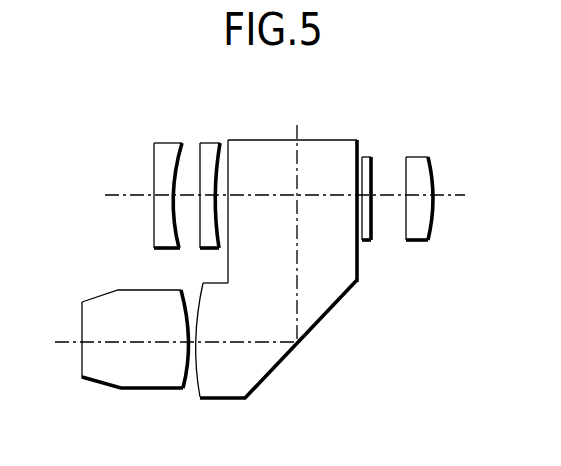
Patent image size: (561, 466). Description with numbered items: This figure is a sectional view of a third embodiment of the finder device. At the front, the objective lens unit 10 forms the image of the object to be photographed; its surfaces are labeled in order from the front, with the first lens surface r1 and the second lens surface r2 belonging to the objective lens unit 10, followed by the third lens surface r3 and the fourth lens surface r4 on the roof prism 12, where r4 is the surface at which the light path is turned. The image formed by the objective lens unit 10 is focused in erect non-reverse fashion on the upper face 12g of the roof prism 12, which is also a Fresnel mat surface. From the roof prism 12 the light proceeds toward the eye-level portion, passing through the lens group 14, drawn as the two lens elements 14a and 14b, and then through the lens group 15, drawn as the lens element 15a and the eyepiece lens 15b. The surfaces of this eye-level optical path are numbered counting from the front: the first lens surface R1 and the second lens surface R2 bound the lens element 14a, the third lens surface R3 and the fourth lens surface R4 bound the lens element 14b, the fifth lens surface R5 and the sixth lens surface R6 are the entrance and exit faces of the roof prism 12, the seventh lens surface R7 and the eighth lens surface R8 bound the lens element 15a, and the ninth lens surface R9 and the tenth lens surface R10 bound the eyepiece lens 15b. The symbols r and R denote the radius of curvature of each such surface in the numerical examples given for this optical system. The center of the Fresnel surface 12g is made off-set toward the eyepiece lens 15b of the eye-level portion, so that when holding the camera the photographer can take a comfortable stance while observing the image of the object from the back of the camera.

The objective lens unit 10 is at (152, 384).
The first lens surface r1 is at (80, 366).
The second lens surface r2 is at (187, 388).
The third lens surface r3 is at (196, 392).
The fourth lens surface r4 is at (315, 139).
The roof prism 12 is at (263, 377).
The upper face of the roof prism 12g is at (263, 146).
The second lens group 14 is at (230, 102).
The first lens of lens group 14 14a is at (167, 143).
The second lens of lens group 14 14b is at (211, 146).
The first lens surface R1 is at (152, 234).
The second lens surface R2 is at (175, 240).
The third lens surface R3 is at (198, 238).
The fourth lens surface R4 is at (215, 241).
The fifth lens surface R5 is at (228, 245).
The sixth lens surface R6 is at (358, 257).
The third lens group 15 is at (430, 110).
The first lens of lens group 15 15a is at (368, 154).
The eyepiece lens 15b is at (413, 156).
The seventh lens surface R7 is at (364, 247).
The eighth lens surface R8 is at (373, 242).
The ninth lens surface R9 is at (407, 236).
The tenth lens surface R10 is at (431, 240).